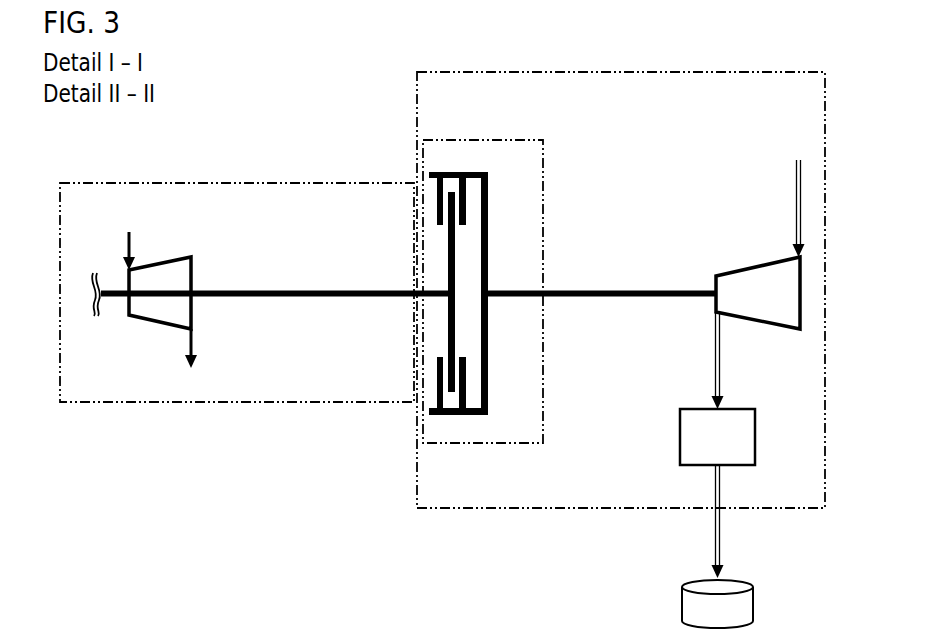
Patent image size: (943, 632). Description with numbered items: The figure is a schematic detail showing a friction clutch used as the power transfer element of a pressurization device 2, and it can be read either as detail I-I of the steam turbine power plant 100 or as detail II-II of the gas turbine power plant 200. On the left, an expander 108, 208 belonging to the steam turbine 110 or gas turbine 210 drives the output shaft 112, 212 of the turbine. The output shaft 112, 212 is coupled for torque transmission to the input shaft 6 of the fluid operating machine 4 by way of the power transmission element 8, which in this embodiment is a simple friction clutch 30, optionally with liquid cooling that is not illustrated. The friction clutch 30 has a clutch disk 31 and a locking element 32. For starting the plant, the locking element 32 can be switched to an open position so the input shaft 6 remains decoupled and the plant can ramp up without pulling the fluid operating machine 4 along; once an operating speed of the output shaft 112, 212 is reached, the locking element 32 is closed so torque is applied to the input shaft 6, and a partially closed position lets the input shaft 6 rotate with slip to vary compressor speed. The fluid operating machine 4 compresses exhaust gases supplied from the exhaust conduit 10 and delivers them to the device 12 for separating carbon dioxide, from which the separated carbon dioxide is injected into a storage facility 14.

The pressurization device 2 is at (773, 70).
The fluid operating machine 4 is at (765, 302).
The input shaft 6 is at (683, 282).
The power transmission element 8 is at (459, 140).
The exhaust conduit 10 is at (795, 213).
The device for separating carbon dioxide 12 is at (706, 446).
The storage facility 14 is at (706, 621).
The friction clutch 30 is at (474, 287).
The clutch disk 31 is at (442, 257).
The locking element 32 is at (430, 387).
The steam turbine power plant 100 is at (349, 84).
The gas turbine power plant 200 is at (266, 47).
The expander 108 is at (161, 332).
The expander 208 is at (113, 471).
The steam turbine 110 is at (215, 402).
The gas turbine 210 is at (288, 479).
The output shaft 112 is at (322, 282).
The output shaft 212 is at (244, 249).